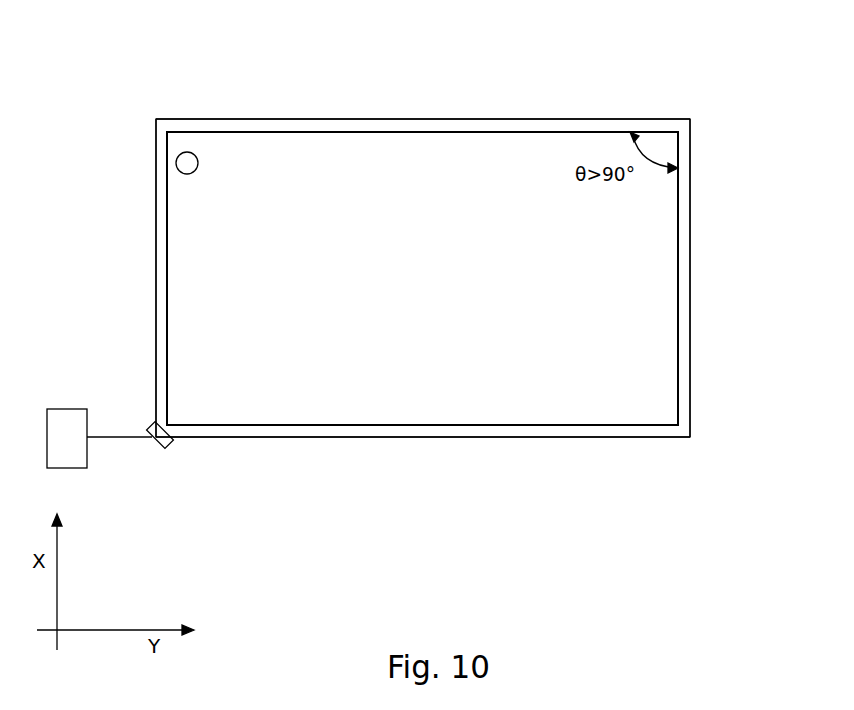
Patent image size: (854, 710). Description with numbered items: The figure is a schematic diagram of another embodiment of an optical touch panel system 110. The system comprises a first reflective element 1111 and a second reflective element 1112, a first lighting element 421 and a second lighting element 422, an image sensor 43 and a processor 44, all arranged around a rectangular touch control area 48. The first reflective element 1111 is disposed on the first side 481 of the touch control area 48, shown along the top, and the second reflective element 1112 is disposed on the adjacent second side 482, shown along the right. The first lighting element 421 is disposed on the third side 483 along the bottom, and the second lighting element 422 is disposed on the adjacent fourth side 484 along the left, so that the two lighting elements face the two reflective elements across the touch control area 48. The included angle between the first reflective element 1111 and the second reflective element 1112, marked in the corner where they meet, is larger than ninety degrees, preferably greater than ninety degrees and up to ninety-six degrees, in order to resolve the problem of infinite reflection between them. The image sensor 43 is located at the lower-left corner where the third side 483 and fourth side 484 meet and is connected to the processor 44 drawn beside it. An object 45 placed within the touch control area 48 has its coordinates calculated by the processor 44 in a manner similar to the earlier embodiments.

The optical touch panel system 110 is at (706, 60).
The touch control area 48 is at (425, 398).
The first side 481 is at (337, 132).
The first reflective element 1111 is at (443, 128).
The second side 482 is at (678, 228).
The second reflective element 1112 is at (678, 337).
The third side 483 is at (315, 425).
The first lighting element 421 is at (560, 430).
The second lighting element 422 is at (167, 221).
The fourth side 484 is at (163, 265).
The object 45 is at (177, 160).
The processor 44 is at (70, 409).
The image sensor 43 is at (157, 447).